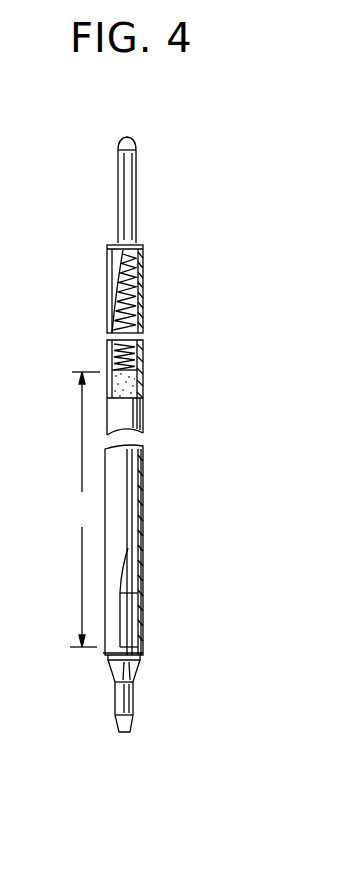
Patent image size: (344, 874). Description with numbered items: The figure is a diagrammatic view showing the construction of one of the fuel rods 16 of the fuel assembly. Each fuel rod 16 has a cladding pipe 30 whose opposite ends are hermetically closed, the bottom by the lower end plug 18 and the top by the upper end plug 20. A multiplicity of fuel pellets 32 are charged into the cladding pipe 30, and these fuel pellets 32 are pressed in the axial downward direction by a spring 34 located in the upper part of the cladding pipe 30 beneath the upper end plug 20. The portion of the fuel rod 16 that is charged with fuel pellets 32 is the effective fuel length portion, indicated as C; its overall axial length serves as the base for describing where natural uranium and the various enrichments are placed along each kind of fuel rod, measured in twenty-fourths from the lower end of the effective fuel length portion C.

The fuel rod 16 is at (148, 360).
The lower end plug 18 is at (133, 695).
The upper end plug 20 is at (134, 209).
The cladding pipe 30 is at (142, 420).
The fuel pellets 32 is at (128, 620).
The spring 34 is at (133, 273).
The effective fuel length portion C is at (85, 509).